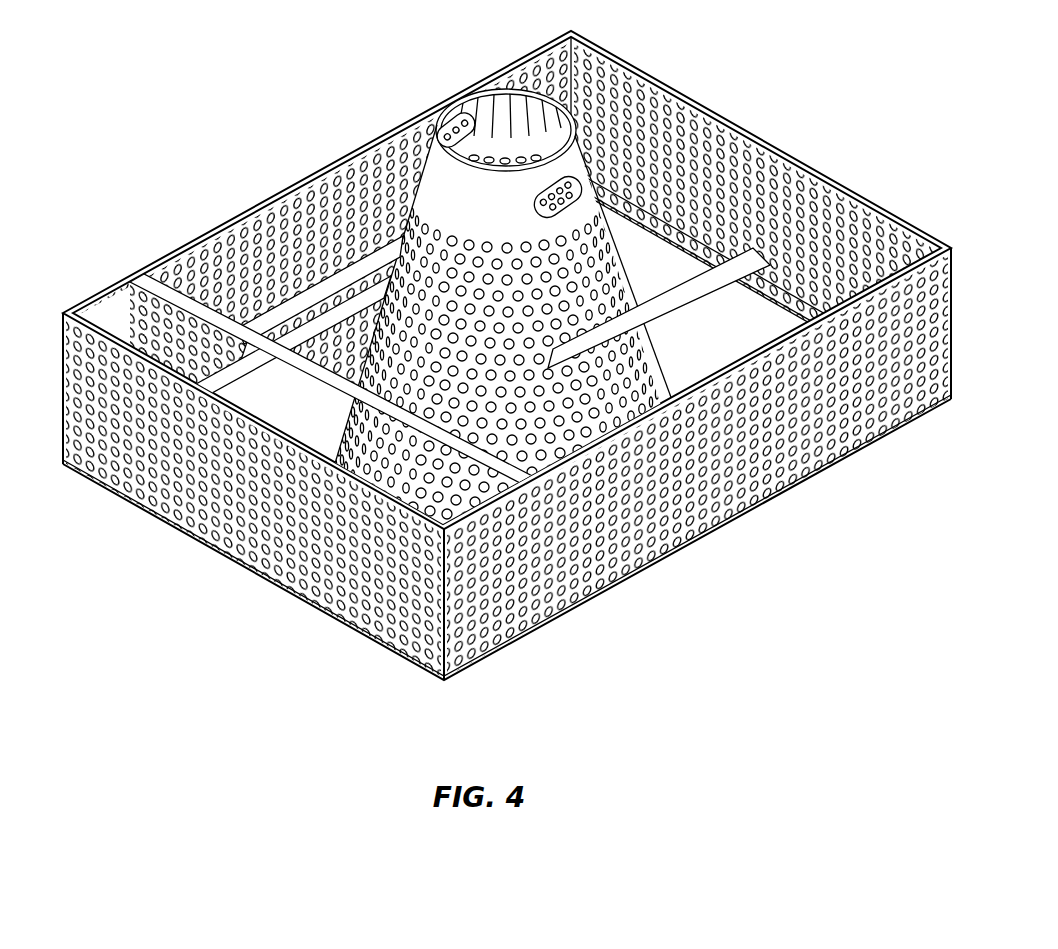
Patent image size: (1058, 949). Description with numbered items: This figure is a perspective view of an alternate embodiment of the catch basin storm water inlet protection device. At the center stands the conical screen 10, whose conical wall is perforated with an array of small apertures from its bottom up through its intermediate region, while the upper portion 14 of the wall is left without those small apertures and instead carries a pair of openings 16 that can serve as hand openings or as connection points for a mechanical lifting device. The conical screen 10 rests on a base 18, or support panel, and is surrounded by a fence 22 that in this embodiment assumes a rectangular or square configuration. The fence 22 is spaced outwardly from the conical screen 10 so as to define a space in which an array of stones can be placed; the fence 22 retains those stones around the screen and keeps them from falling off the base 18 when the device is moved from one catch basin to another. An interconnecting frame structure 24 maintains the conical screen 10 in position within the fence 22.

The conical screen 10 is at (637, 253).
The upper portion 14 is at (447, 197).
The openings 16 is at (581, 172).
The base 18 is at (287, 403).
The fence 22 is at (208, 577).
The interconnecting frame structure 24 is at (270, 327).